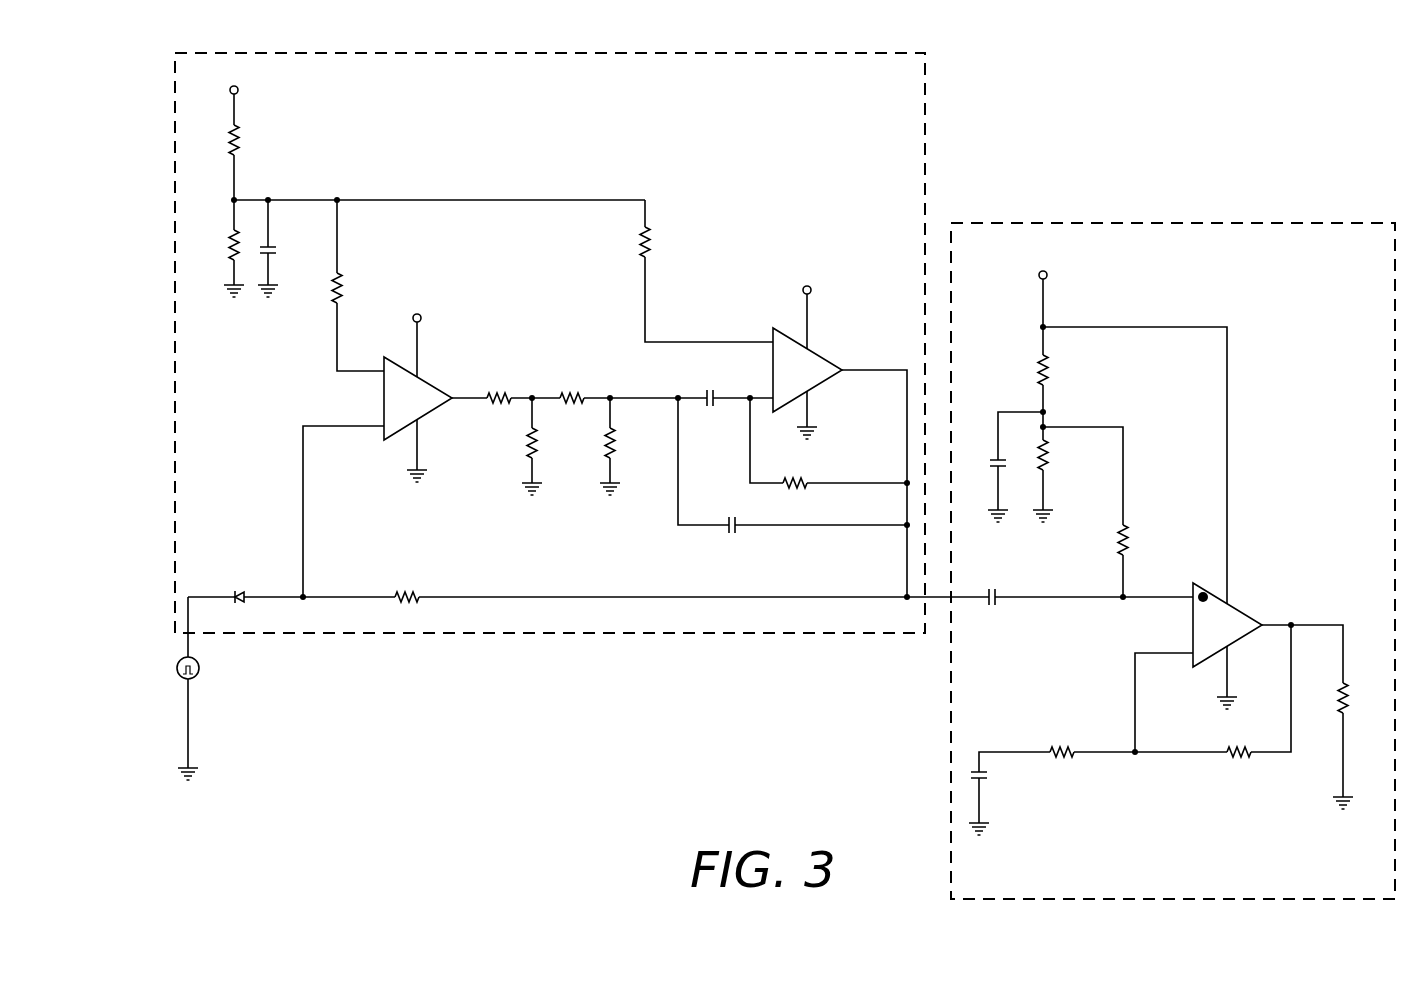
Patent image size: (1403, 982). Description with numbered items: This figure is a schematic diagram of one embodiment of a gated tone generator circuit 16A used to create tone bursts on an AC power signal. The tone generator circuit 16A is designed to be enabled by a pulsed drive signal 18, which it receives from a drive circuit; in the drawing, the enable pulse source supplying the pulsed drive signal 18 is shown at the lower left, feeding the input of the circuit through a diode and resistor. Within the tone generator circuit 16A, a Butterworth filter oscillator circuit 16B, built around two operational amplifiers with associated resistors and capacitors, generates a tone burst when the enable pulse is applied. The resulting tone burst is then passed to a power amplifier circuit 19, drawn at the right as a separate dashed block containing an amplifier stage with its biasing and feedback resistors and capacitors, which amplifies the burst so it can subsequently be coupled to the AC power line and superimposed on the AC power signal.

The gated tone generator circuit 16A is at (930, 112).
The Butterworth filter oscillator circuit 16B is at (175, 205).
The power amplifier circuit 19 is at (1150, 223).
The pulsed drive signal 18 is at (198, 681).